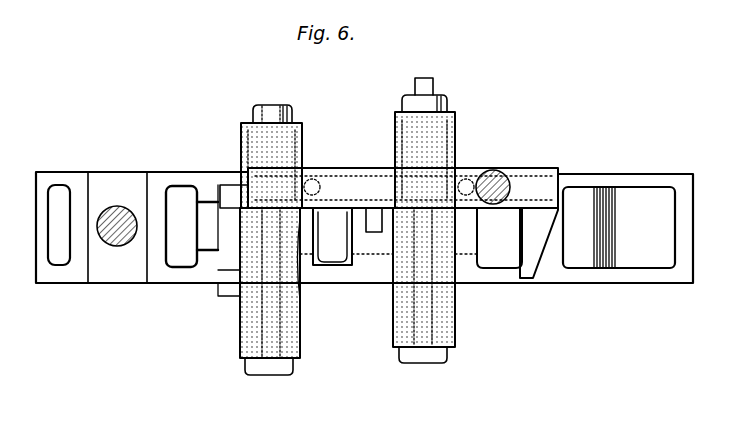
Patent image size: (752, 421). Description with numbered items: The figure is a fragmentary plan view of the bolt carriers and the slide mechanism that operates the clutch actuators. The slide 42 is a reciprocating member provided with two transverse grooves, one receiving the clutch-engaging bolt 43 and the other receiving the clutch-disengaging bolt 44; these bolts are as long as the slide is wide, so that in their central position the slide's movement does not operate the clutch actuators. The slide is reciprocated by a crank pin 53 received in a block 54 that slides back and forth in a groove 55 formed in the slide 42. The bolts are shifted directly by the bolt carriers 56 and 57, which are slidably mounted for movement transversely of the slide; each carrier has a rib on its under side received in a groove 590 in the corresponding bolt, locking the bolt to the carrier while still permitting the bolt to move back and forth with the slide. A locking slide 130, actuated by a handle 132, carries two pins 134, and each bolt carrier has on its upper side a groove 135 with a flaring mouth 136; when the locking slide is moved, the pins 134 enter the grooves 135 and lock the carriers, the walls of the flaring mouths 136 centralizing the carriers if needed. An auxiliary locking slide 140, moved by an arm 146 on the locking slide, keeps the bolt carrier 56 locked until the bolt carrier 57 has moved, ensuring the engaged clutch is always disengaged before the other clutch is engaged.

The slide 42 is at (182, 268).
The clutch-engaging bolt 43 is at (385, 278).
The clutch-disengaging bolt 44 is at (229, 287).
The crank pin 53 is at (113, 240).
The block 54 is at (118, 267).
The groove 55 is at (149, 188).
The bolt carrier 56 is at (456, 112).
The bolt carrier 57 is at (300, 125).
The locking slide 130 is at (481, 168).
The handle 132 is at (507, 183).
The pins 134 is at (313, 178).
The groove 135 is at (244, 180).
The flaring mouth 136 is at (288, 267).
The auxiliary locking slide 140 is at (515, 285).
The arm 146 is at (540, 242).
The groove 590 is at (243, 188).